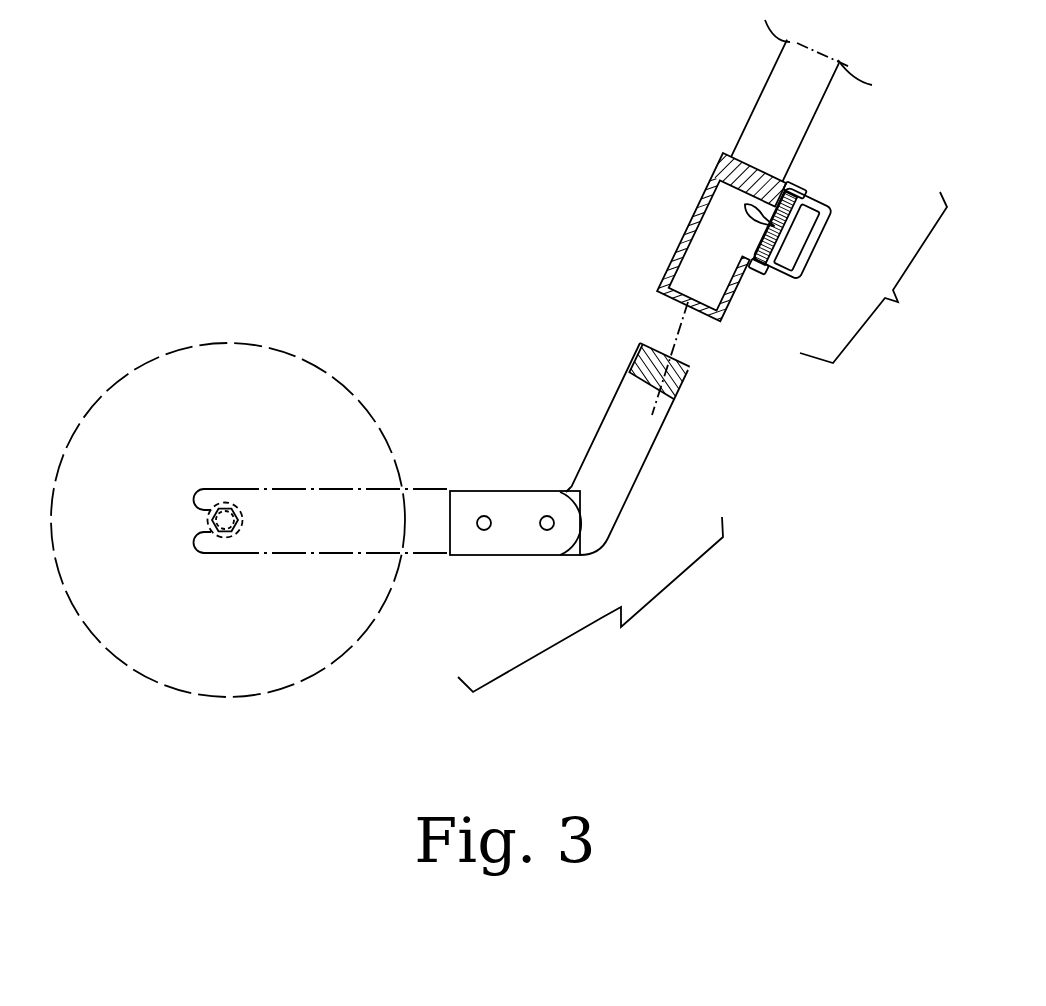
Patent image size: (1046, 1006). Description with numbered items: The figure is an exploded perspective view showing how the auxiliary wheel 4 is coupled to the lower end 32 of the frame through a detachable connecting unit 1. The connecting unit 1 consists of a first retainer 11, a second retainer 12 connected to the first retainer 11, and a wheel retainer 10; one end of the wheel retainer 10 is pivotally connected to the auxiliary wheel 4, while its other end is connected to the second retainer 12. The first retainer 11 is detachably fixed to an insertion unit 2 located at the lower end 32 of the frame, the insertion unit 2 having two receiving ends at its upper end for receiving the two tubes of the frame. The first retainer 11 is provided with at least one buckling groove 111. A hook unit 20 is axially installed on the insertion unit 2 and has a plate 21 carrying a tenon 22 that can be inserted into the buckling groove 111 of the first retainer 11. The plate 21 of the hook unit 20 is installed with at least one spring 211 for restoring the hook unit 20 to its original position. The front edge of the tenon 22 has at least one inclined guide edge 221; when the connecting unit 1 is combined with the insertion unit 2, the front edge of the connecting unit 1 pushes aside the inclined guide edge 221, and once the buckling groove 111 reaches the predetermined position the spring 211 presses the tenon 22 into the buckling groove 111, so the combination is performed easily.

The connecting unit 1 is at (590, 604).
The wheel retainer 10 is at (423, 545).
The first retainer 11 is at (668, 449).
The buckling groove 111 is at (673, 384).
The second retainer 12 is at (517, 523).
The insertion unit 2 is at (695, 208).
The hook unit 20 is at (836, 264).
The plate 21 is at (797, 265).
The spring 211 is at (762, 272).
The tenon 22 is at (806, 205).
The inclined guide edge 221 is at (790, 230).
The lower end 32 is at (783, 87).
The auxiliary wheel 4 is at (240, 407).